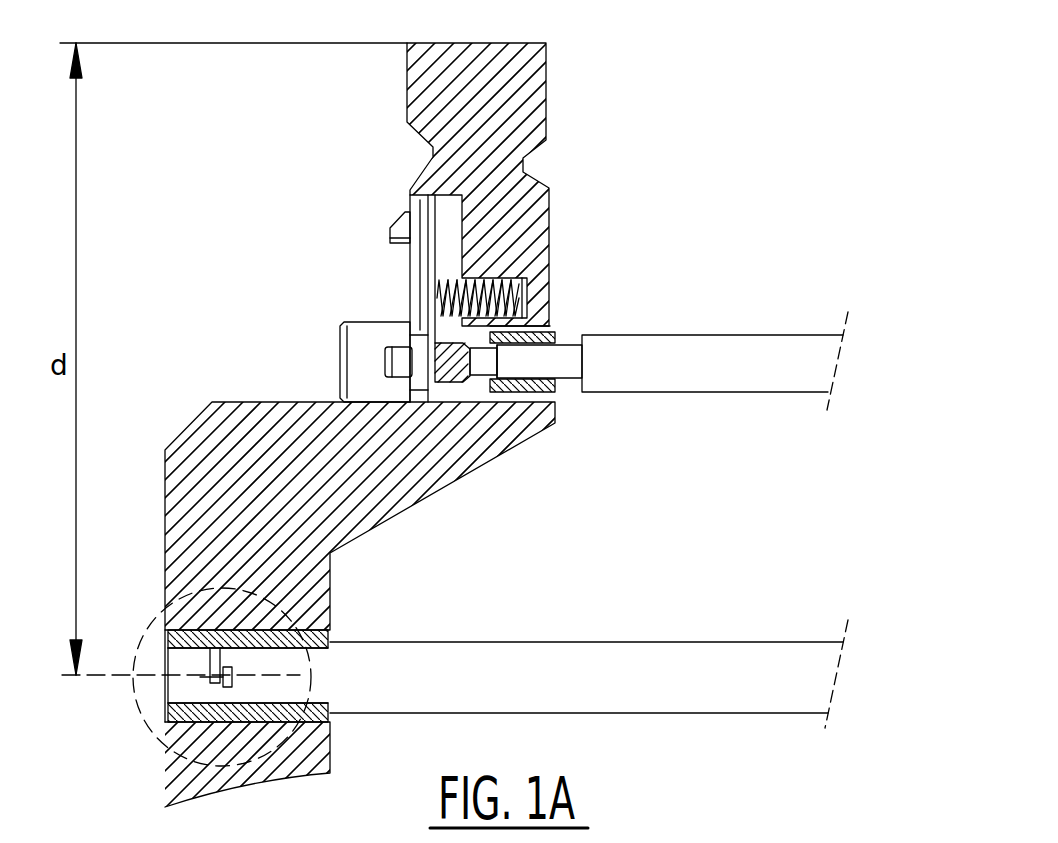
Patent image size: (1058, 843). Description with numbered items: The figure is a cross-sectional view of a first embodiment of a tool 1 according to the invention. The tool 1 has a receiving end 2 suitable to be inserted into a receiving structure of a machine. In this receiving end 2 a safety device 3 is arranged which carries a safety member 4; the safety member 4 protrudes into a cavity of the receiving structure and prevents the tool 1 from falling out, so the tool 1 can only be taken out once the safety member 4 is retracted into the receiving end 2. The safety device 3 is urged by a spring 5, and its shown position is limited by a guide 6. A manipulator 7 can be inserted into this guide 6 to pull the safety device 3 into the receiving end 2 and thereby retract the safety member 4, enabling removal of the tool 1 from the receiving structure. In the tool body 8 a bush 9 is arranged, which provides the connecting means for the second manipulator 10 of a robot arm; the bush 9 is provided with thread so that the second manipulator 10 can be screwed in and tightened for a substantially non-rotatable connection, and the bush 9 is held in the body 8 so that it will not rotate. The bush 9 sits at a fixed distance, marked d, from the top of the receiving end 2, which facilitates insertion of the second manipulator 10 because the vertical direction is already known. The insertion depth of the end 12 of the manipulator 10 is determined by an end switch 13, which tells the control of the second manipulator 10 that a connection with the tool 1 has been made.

The tool 1 is at (153, 347).
The receiving end 2 is at (530, 78).
The safety device 3 is at (417, 267).
The safety member 4 is at (401, 230).
The spring 5 is at (515, 297).
The guide 6 is at (585, 393).
The manipulator 7 is at (705, 345).
The tool body 8 is at (205, 617).
The bush 9 is at (175, 712).
The second manipulator 10 is at (578, 663).
The end of the manipulator 12 is at (300, 674).
The end switch 13 is at (223, 663).